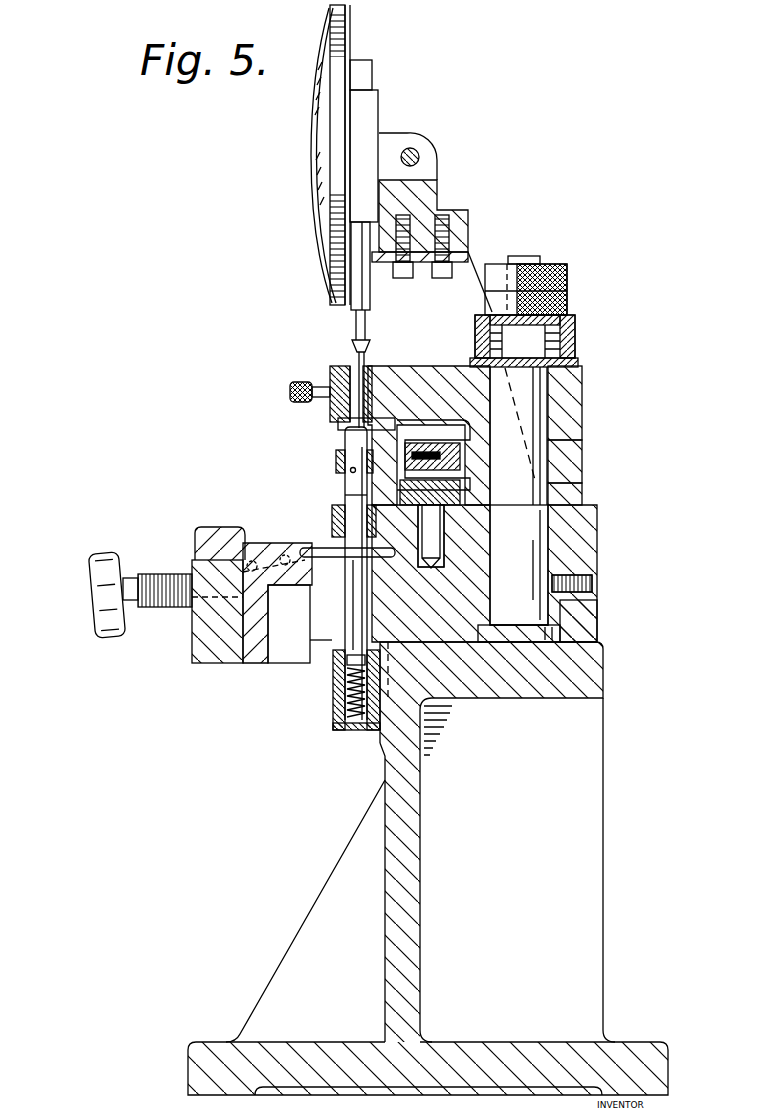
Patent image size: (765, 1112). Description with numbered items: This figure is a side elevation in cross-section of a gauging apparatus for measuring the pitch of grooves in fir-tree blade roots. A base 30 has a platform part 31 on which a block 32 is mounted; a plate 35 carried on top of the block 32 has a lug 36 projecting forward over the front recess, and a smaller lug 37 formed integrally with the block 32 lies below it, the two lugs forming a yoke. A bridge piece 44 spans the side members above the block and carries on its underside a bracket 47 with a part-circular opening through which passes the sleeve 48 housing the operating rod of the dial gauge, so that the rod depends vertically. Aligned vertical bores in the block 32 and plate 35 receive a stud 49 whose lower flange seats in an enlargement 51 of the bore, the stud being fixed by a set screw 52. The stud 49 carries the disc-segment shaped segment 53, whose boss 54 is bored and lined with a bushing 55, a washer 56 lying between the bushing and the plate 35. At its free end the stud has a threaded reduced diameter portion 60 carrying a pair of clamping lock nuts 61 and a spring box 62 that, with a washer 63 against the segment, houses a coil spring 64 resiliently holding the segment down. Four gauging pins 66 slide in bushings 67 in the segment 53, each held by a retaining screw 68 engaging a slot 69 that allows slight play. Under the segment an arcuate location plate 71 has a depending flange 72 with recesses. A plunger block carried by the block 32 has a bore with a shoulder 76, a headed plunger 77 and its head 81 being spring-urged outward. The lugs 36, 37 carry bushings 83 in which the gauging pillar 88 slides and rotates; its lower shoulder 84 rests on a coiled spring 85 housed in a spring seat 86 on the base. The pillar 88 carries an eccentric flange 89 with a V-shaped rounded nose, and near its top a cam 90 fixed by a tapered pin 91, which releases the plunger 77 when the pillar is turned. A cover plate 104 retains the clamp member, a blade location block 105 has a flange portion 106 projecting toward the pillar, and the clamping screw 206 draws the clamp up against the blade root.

The base 30 is at (568, 868).
The platform part 31 is at (588, 676).
The block 32 is at (590, 622).
The plate 35 is at (590, 522).
The lug 36 is at (470, 522).
The lug 37 is at (330, 640).
The bridge piece 44 is at (438, 192).
The bracket 47 is at (378, 266).
The sleeve 48 is at (358, 302).
The stud 49 is at (542, 552).
The enlargement of the bore 51 is at (476, 642).
The set screw 52 is at (578, 582).
The segment 53 is at (440, 372).
The boss 54 is at (572, 414).
The bushing 55 is at (560, 450).
The washer 56 is at (584, 494).
The reduced diameter portion 60 is at (527, 256).
The clamping lock nuts 61 is at (570, 282).
The spring box 62 is at (578, 328).
The washer 63 is at (578, 364).
The coil spring 64 is at (562, 349).
The gauging pins 66 is at (372, 392).
The bushing 67 is at (305, 392).
The retaining screw 68 is at (352, 378).
The slot 69 is at (368, 372).
The segment location plate 71 is at (338, 424).
The arcuate flange 72 is at (345, 440).
The shoulder 76 is at (470, 490).
The headed plunger 77 is at (478, 470).
The head 81 is at (345, 496).
The bushing 83 is at (334, 518).
The shoulder 84 is at (340, 660).
The coiled spring 85 is at (346, 720).
The spring seat 86 is at (336, 700).
The gauging pillar 88 is at (355, 582).
The flange 89 is at (338, 553).
The cam 90 is at (338, 462).
The tapered pin 91 is at (350, 472).
The cover plate 104 is at (300, 572).
The blade location block 105 is at (270, 660).
The flange portion 106 is at (278, 548).
The clamping screw 206 is at (108, 638).